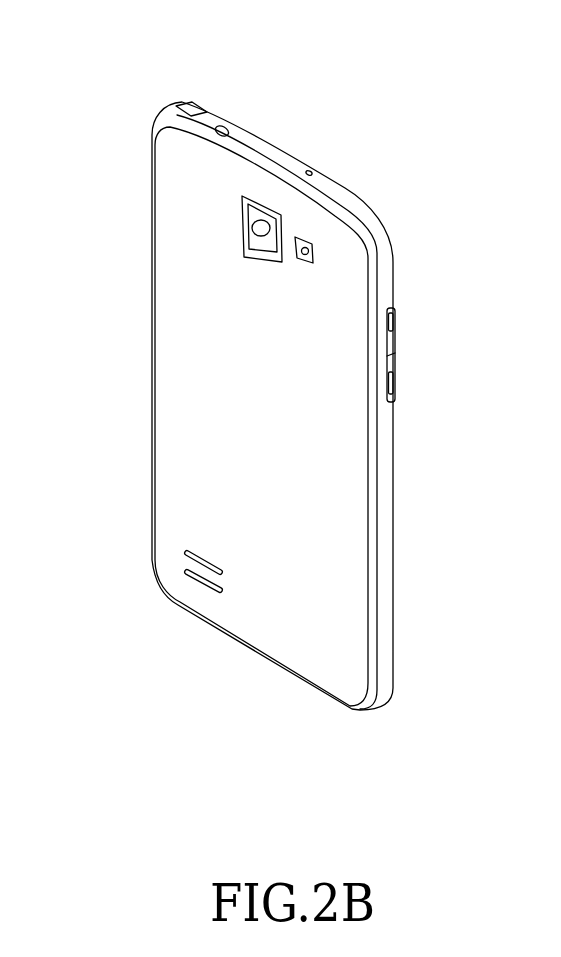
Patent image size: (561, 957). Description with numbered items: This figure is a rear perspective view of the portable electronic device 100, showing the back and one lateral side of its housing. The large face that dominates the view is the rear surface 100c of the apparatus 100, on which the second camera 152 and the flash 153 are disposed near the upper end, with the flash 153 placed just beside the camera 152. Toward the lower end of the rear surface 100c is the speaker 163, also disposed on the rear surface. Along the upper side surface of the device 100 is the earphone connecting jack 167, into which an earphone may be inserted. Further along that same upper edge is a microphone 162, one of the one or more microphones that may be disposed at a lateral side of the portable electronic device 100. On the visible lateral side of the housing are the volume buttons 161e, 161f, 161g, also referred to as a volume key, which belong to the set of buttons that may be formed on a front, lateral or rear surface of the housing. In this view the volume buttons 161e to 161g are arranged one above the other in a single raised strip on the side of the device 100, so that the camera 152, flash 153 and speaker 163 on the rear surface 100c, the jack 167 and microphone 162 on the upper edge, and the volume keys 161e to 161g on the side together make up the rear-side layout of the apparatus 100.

The portable electronic device 100 is at (158, 81).
The rear surface 100c is at (178, 389).
The earphone connecting jack 167 is at (224, 128).
The microphone 162 is at (312, 171).
The second camera 152 is at (243, 222).
The flash 153 is at (313, 258).
The volume button 161e is at (398, 310).
The volume button 161f is at (393, 338).
The volume button 161g is at (393, 367).
The speaker 163 is at (184, 553).